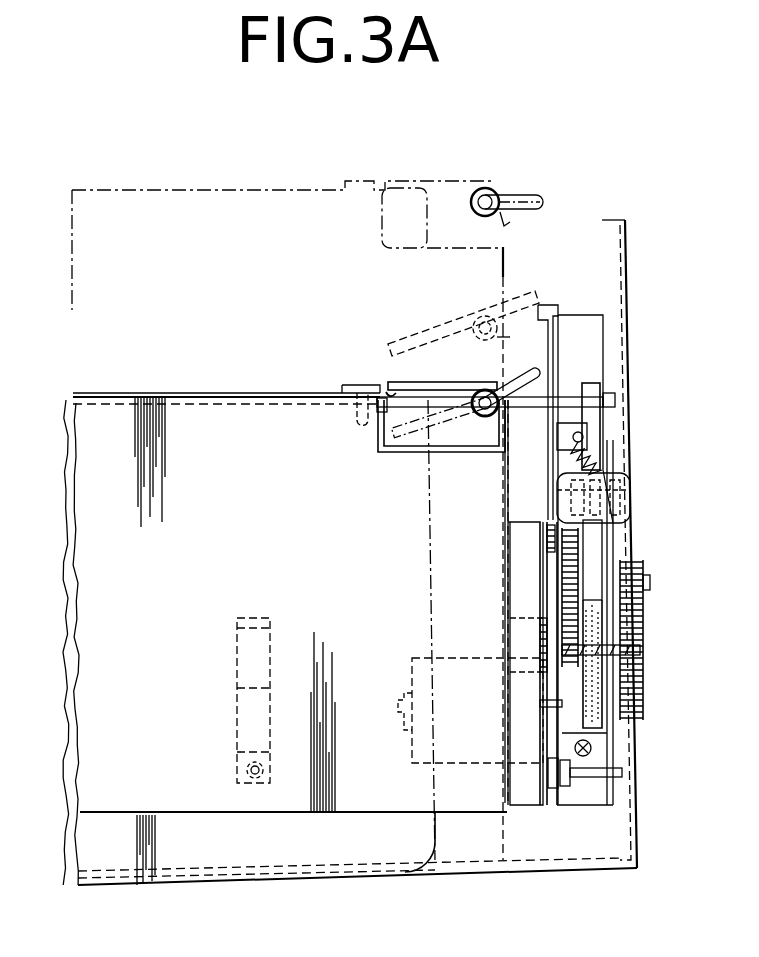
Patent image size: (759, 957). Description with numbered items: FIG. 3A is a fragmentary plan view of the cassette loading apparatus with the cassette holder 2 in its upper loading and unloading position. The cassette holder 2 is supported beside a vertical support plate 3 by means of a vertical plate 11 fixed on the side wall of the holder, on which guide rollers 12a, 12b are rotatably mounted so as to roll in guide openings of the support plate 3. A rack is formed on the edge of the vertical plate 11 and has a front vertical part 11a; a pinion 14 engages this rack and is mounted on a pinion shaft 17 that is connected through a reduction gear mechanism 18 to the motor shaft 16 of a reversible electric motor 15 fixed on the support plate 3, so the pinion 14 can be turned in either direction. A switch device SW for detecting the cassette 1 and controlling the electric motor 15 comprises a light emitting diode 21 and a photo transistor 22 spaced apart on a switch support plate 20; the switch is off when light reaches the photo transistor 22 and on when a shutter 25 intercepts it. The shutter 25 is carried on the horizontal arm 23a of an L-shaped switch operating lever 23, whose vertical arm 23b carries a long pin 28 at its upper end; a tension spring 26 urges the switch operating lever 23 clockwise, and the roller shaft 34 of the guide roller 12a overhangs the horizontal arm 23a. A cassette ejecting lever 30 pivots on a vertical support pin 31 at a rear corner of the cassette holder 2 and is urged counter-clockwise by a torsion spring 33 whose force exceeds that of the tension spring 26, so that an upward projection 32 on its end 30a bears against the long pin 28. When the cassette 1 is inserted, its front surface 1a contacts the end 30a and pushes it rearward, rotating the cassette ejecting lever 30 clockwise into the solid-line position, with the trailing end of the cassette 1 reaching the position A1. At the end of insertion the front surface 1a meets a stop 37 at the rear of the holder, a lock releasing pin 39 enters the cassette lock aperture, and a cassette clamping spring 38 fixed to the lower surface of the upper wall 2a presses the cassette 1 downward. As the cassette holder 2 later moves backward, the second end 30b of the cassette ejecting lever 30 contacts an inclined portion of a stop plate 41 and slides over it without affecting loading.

The cassette 1 is at (255, 853).
The front surface of cassette 1a is at (70, 398).
The position A1 is at (637, 870).
The cassette holder 2 is at (107, 817).
The upper wall of cassette holder 2a is at (97, 640).
The vertical support plate 3 is at (607, 733).
The vertical plate 11 is at (523, 778).
The front vertical part of rack 11a is at (532, 805).
The guide roller 12a is at (568, 782).
The guide roller 12b is at (612, 497).
The pinion 14 is at (540, 640).
The reversible electric motor 15 is at (405, 735).
The motor shaft 16 is at (560, 705).
The pinion shaft 17 is at (605, 648).
The reduction gear mechanism 18 is at (648, 567).
The switch support plate 20 is at (612, 447).
The light emitting diode 21 is at (620, 470).
The photo transistor 22 is at (560, 505).
The switch operating lever 23 is at (607, 423).
The horizontal arm 23a is at (605, 550).
The vertical arm 23b is at (587, 390).
The shutter 25 is at (543, 532).
The tension spring 26 is at (575, 455).
The long pin 28 is at (383, 405).
The cassette ejecting lever 30 is at (487, 195).
The end of cassette ejecting lever 30a is at (385, 402).
The second end of cassette ejecting lever 30b is at (545, 385).
The vertical support pin 31 is at (478, 390).
The upward projection 32 is at (382, 193).
The torsion spring 33 is at (500, 410).
The roller shaft 34 is at (622, 772).
The stop 37 is at (200, 393).
The cassette clamping spring 38 is at (252, 645).
The lock releasing pin 39 is at (357, 412).
The stop plate 41 is at (548, 303).
The switch device SW is at (578, 483).